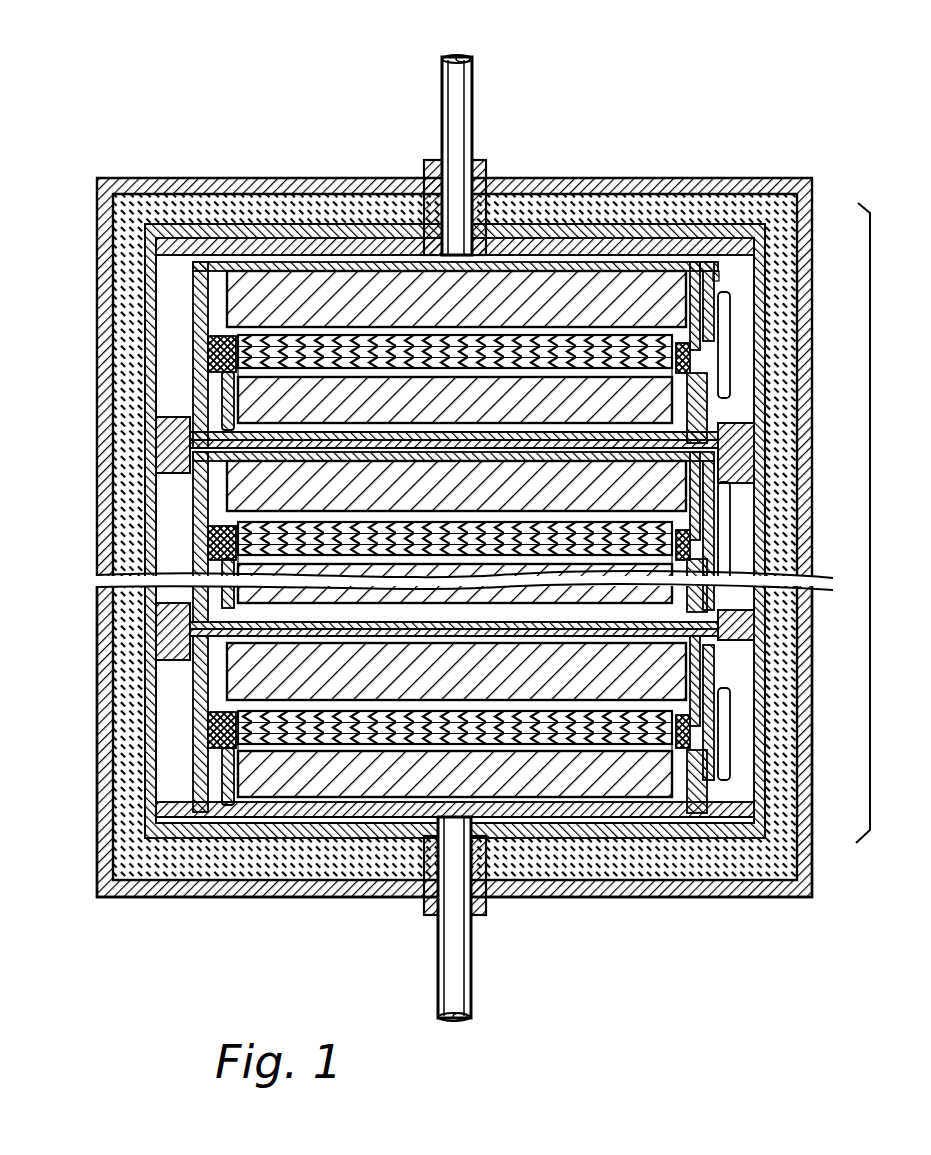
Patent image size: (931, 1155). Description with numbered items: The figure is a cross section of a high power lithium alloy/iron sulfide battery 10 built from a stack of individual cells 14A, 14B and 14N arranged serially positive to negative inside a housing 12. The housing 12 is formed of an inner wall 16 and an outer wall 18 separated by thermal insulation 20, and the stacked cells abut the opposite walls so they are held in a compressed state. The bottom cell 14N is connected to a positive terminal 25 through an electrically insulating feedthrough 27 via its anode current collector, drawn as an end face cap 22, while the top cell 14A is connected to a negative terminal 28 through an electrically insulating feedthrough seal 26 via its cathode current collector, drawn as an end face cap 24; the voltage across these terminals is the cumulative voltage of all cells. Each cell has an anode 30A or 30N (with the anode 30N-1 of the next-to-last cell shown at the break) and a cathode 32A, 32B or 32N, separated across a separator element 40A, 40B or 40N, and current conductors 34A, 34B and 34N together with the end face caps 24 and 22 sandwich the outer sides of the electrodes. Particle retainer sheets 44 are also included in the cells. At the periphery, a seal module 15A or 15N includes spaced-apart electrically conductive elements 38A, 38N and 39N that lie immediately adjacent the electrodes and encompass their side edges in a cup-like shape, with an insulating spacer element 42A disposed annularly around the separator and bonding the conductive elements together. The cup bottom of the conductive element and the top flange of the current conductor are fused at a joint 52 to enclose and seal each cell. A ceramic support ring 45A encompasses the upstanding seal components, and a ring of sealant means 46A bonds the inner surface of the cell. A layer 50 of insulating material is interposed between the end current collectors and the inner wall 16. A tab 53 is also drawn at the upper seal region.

The battery 10 is at (457, 538).
The housing 12 is at (166, 176).
The cell 14A is at (457, 407).
The cell 14B is at (385, 516).
The cell 14N is at (453, 717).
The peripheral seal module 15A is at (733, 348).
The peripheral seal module 15N is at (732, 735).
The inner wall 16 is at (150, 712).
The outer wall 18 is at (120, 668).
The thermal insulation 20 is at (130, 800).
The end face cap 22 is at (658, 820).
The end face cap 24 is at (292, 238).
The positive terminal 25 is at (458, 958).
The electrically insulating feedthrough seal 26 is at (490, 167).
The electrically insulating feedthrough 27 is at (432, 912).
The negative terminal 28 is at (455, 110).
The anode 30A is at (602, 417).
The anode 30N is at (597, 786).
The anode 30N-1 is at (245, 582).
The cathode 32A is at (580, 309).
The cathode 32B is at (592, 499).
The cathode 32N is at (597, 687).
The current conductor 34A is at (362, 264).
The current conductor 34B is at (347, 452).
The current conductor 34N is at (295, 636).
The electrically conductive element 38A is at (707, 410).
The electrically conductive element 38N is at (697, 786).
The electrically conductive element 39N is at (700, 676).
The separator element 40A is at (440, 370).
The separator element 40B is at (410, 542).
The separator element 40N is at (383, 722).
The spacer element 42A is at (692, 332).
The particle retainer sheets 44 is at (482, 362).
The ceramic support ring 45A is at (205, 372).
The sealant means 46A is at (205, 405).
The layer of insulating material 50 is at (165, 430).
The joint 52 is at (175, 452).
The cup tab 53 is at (735, 264).